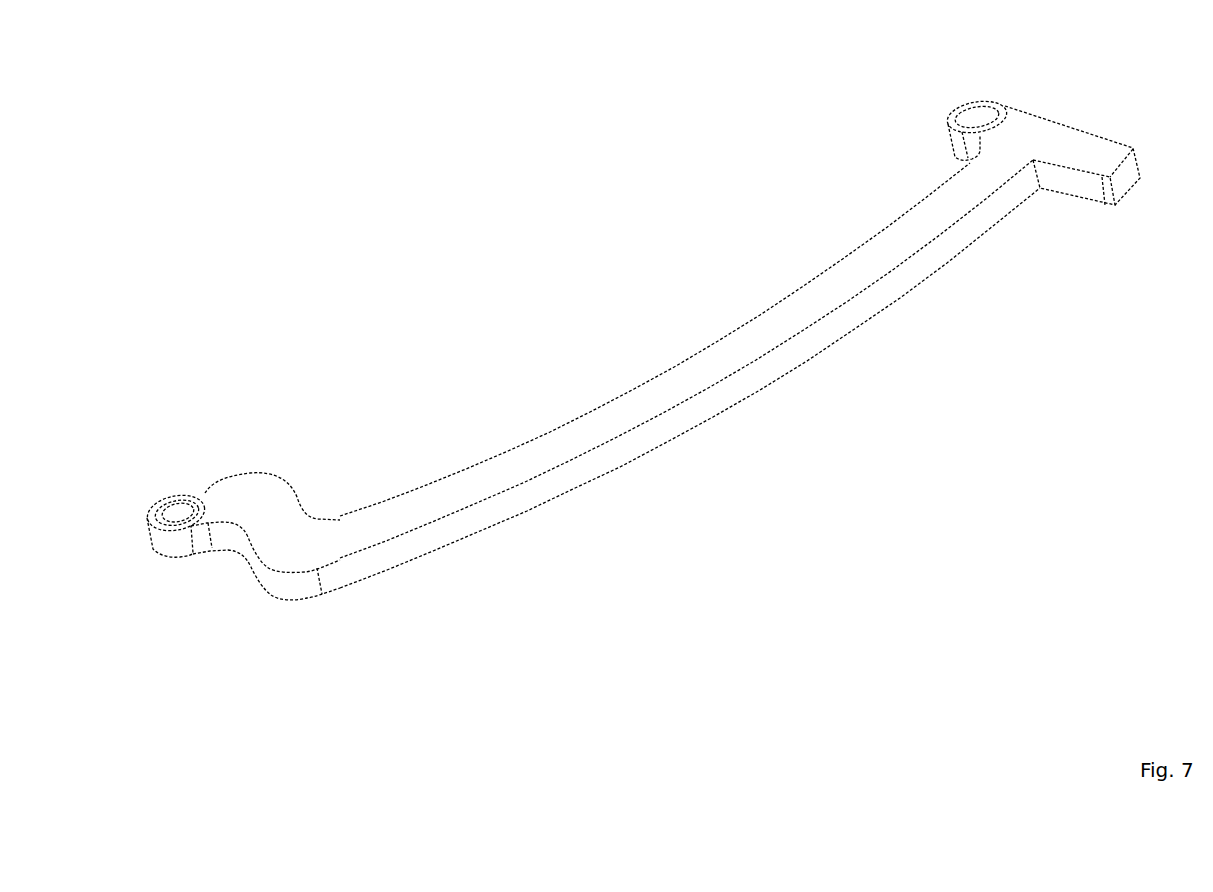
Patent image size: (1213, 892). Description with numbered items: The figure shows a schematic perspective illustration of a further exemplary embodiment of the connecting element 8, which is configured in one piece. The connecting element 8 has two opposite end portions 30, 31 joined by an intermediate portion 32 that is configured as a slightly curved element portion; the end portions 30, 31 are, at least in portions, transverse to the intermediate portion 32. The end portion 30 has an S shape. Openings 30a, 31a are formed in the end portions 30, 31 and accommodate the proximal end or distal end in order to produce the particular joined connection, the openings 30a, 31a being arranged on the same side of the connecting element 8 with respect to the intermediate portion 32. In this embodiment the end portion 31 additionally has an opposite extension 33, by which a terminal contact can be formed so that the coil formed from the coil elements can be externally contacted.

The connecting element 8 is at (503, 542).
The end portion 30 is at (235, 503).
The opening 30a is at (190, 513).
The end portion 31 is at (1037, 148).
The opening 31a is at (992, 118).
The intermediate portion 32 is at (695, 368).
The extension 33 is at (1103, 157).